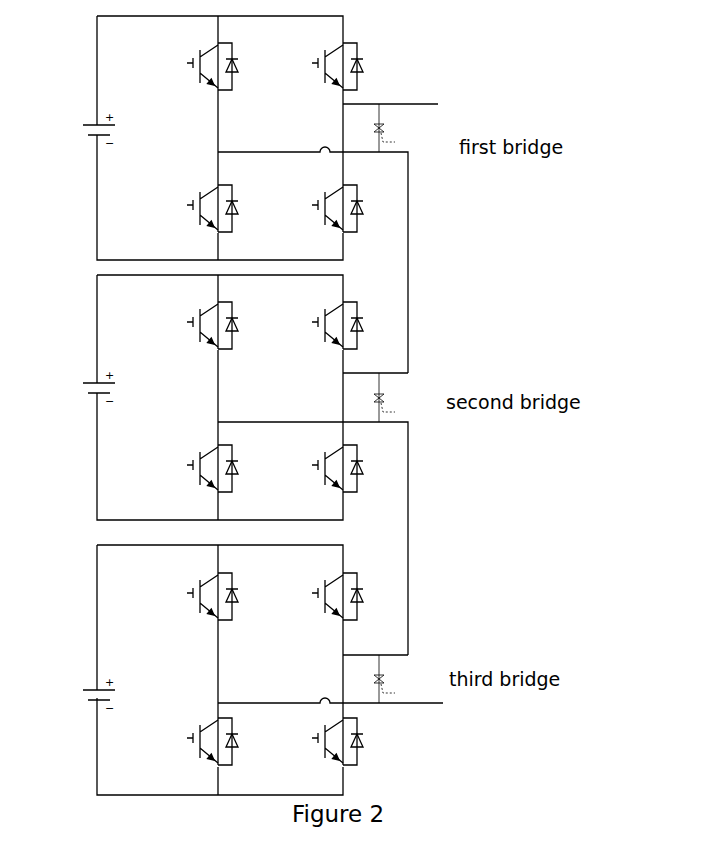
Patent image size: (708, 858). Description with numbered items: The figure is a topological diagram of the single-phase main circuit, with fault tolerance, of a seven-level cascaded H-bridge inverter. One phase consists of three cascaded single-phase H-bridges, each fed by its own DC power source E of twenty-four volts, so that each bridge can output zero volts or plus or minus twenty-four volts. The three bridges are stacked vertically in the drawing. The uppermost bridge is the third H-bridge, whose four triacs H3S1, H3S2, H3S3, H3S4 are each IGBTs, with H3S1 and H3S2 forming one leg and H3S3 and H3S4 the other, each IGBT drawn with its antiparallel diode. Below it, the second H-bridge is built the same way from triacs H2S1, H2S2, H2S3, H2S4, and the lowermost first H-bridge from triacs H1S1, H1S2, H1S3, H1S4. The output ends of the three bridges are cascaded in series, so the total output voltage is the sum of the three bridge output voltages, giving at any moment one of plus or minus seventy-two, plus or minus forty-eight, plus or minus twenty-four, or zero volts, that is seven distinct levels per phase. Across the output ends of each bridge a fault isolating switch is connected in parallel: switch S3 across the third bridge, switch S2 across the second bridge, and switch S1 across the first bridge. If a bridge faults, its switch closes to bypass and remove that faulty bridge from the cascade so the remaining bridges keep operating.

The DC power source E is at (86, 413).
The triac of the third H-bridge H3S1 is at (180, 66).
The triac of the third H-bridge H3S2 is at (180, 208).
The triac of the third H-bridge H3S3 is at (306, 66).
The triac of the third H-bridge H3S4 is at (306, 208).
The triac of the second H-bridge H2S1 is at (180, 325).
The triac of the second H-bridge H2S2 is at (180, 468).
The triac of the second H-bridge H2S3 is at (306, 325).
The triac of the second H-bridge H2S4 is at (306, 468).
The triac of the first H-bridge H1S1 is at (180, 596).
The triac of the first H-bridge H1S2 is at (180, 741).
The triac of the first H-bridge H1S3 is at (306, 596).
The triac of the first H-bridge H1S4 is at (306, 741).
The fault isolating switch S3 is at (404, 128).
The fault isolating switch S2 is at (404, 397).
The fault isolating switch S1 is at (404, 679).